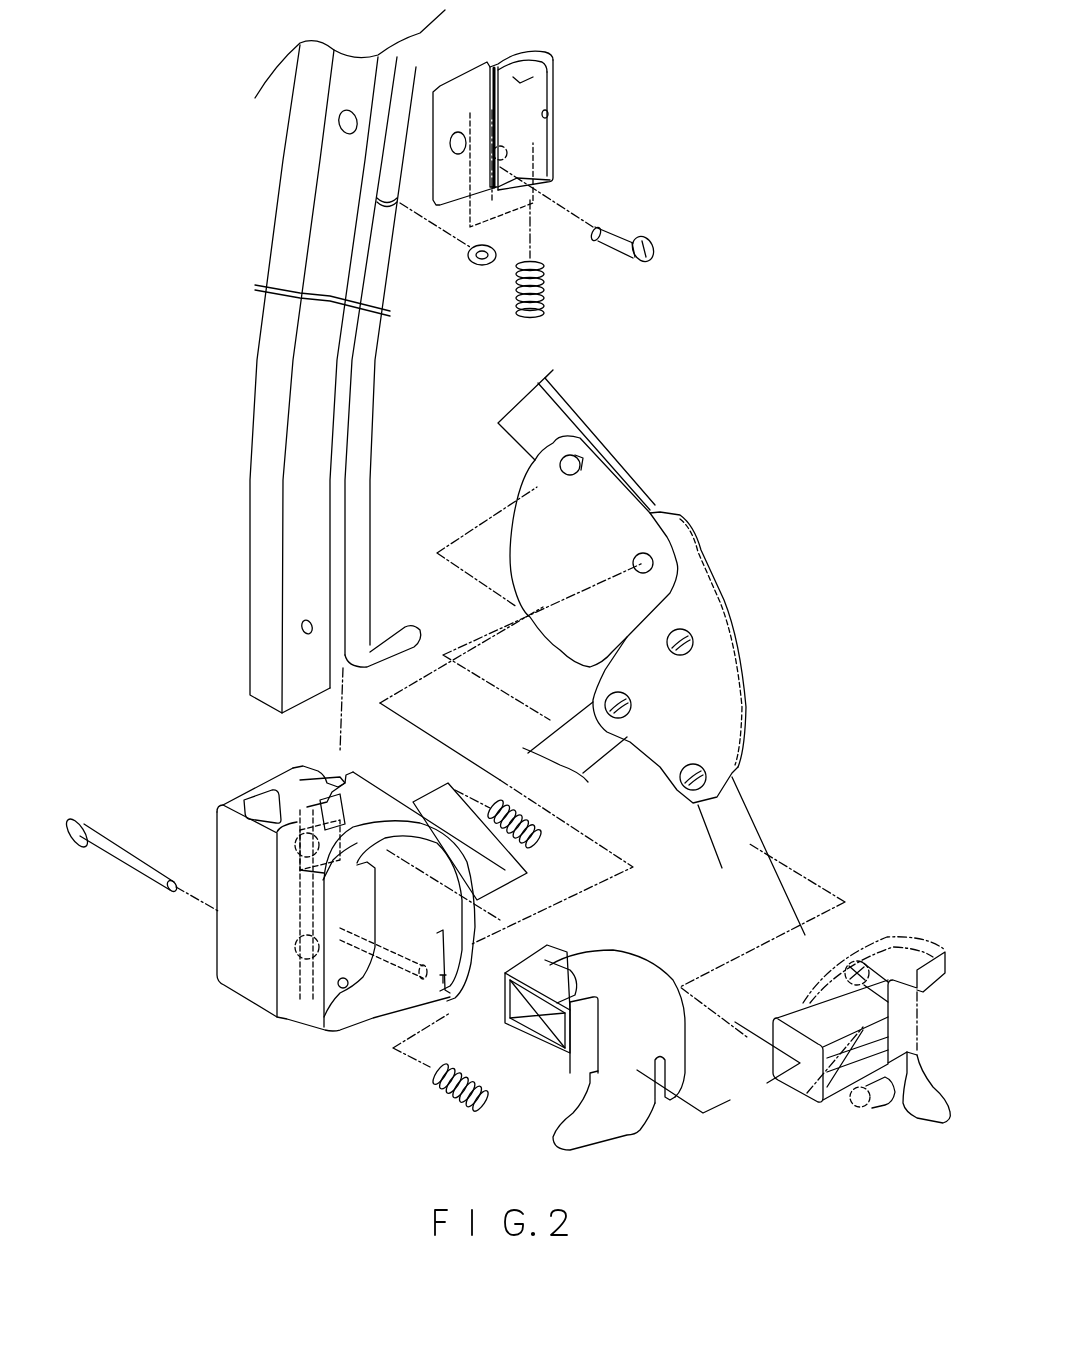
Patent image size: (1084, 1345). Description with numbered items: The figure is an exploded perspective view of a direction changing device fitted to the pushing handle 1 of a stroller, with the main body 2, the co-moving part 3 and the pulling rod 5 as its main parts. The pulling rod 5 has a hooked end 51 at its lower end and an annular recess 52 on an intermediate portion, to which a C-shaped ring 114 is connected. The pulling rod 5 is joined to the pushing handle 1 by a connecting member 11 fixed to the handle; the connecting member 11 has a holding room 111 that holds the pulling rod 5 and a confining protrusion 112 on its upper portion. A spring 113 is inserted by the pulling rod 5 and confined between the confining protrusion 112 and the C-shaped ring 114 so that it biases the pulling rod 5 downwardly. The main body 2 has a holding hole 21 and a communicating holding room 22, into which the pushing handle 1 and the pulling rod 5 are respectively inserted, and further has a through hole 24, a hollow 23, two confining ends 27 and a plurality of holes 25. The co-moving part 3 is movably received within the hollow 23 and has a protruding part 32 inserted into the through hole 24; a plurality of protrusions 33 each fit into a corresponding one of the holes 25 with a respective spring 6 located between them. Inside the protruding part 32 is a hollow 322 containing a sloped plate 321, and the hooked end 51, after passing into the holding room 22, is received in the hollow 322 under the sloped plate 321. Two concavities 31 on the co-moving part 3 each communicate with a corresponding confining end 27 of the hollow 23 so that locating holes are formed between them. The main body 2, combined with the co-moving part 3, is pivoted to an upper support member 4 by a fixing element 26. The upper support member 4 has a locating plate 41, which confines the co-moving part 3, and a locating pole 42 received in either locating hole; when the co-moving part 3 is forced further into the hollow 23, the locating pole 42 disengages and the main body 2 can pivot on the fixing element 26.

The pushing handle 1 is at (272, 328).
The main body 2 is at (237, 978).
The co-moving part 3 is at (637, 983).
The upper support member 4 is at (543, 418).
The pulling rod 5 is at (382, 255).
The spring 6 is at (538, 845).
The connecting member 11 is at (545, 87).
The holding hole 21 is at (273, 800).
The holding room 22 is at (323, 780).
The hollow 23 is at (373, 988).
The through hole 24 is at (273, 890).
The holes 25 is at (343, 810).
The fixing element 26 is at (118, 850).
The confining ends 27 is at (293, 880).
The concavities 31 is at (562, 983).
The protruding part 32 is at (540, 957).
The protrusions 33 is at (855, 960).
The locating plate 41 is at (613, 512).
The locating pole 42 is at (587, 460).
The hooked end 51 is at (385, 642).
The annular recess 52 is at (377, 200).
The holding room 111 is at (548, 118).
The confining protrusion 112 is at (537, 60).
The spring 113 is at (548, 292).
The C-shaped ring 114 is at (480, 266).
The sloped plate 321 is at (517, 1027).
The hollow 322 is at (560, 1037).